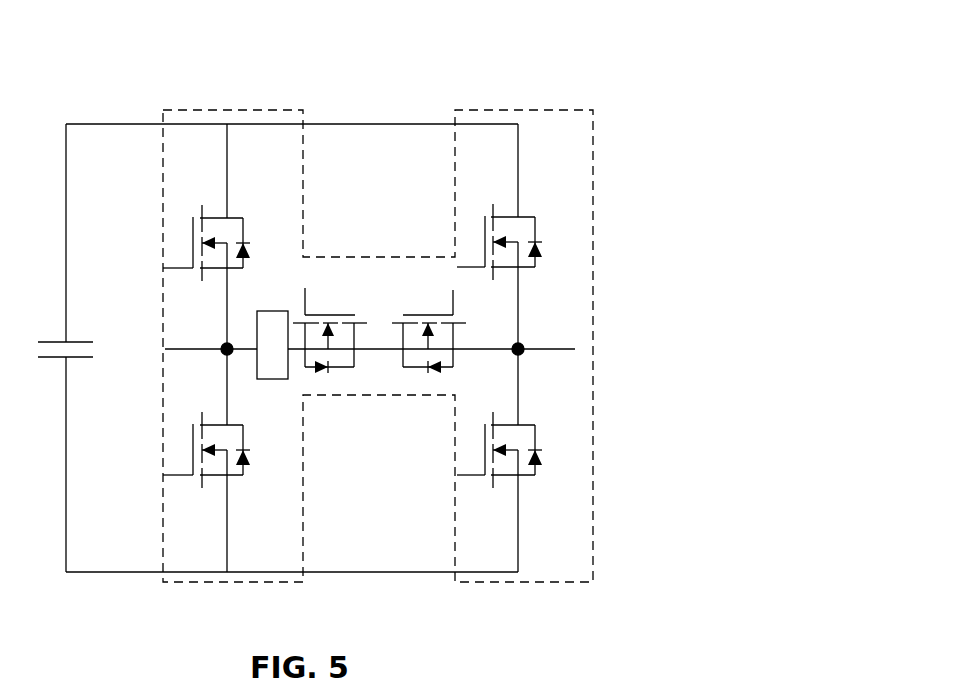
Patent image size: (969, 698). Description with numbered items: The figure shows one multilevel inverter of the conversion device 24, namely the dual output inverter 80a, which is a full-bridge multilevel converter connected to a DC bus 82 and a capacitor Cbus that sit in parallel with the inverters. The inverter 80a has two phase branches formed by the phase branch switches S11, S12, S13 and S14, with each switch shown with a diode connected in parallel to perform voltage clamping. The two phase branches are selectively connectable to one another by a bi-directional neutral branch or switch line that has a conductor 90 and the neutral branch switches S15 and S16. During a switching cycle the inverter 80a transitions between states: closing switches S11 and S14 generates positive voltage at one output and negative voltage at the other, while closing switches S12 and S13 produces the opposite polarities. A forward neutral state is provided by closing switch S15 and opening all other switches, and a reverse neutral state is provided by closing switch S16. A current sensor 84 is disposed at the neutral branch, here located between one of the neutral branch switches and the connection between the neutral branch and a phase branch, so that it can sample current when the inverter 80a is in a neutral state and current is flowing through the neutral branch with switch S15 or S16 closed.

The conversion device 24 is at (142, 24).
The dual output inverter 80a is at (512, 89).
The DC bus 82 is at (106, 122).
The capacitor Cbus is at (73, 340).
The phase branch switch S11 is at (237, 218).
The phase branch switch S12 is at (232, 477).
The phase branch switch S13 is at (535, 235).
The phase branch switch S14 is at (535, 440).
The neutral branch switch S15 is at (330, 347).
The neutral branch switch S16 is at (446, 321).
The current sensor 84 is at (273, 311).
The conductor 90 is at (396, 368).